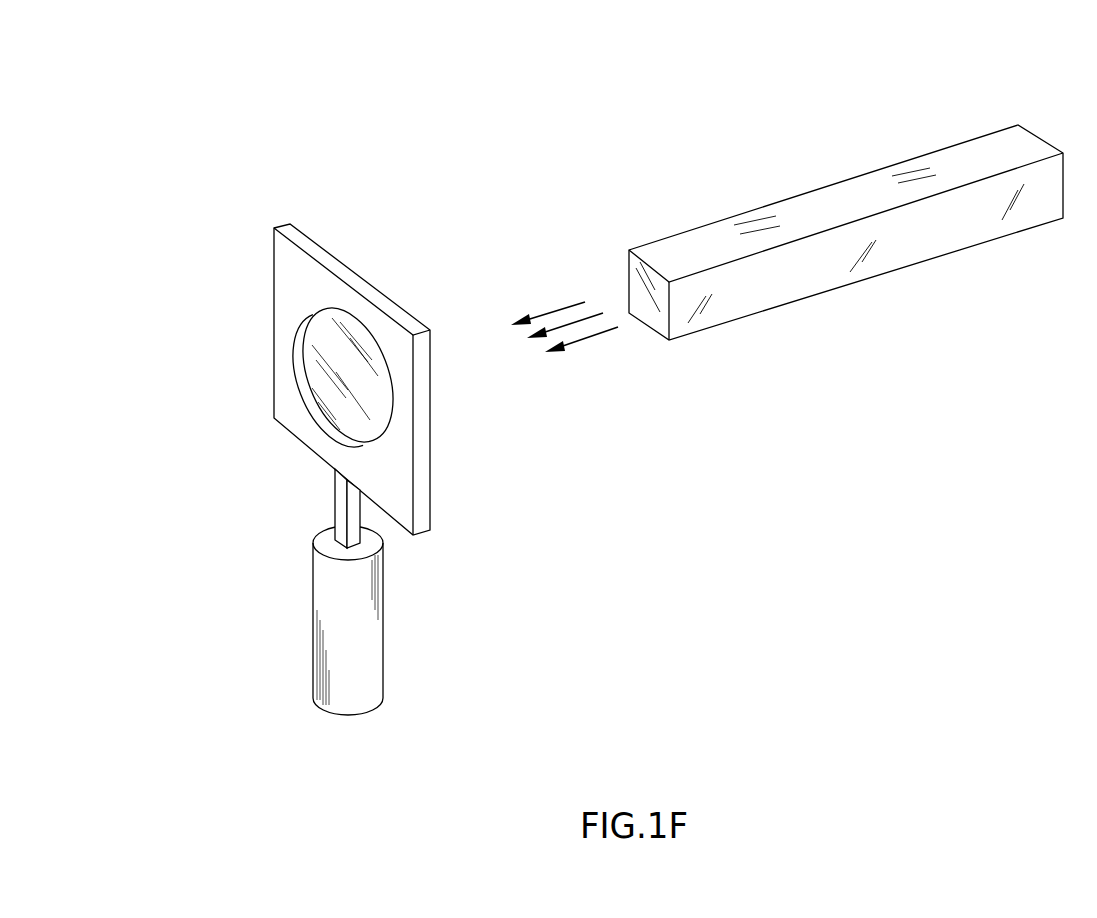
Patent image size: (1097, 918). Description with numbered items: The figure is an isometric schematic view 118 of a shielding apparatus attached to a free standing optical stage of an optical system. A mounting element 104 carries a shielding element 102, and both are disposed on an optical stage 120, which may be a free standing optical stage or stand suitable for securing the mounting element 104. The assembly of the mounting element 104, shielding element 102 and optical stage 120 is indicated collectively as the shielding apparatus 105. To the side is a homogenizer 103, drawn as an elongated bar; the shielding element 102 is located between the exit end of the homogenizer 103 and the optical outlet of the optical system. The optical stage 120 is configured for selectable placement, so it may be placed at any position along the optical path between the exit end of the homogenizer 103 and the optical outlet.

The schematic view 118 is at (264, 96).
The lens assembly 105 is at (176, 248).
The mounting element 104 is at (289, 263).
The shielding element 102 is at (320, 340).
The optical stage 120 is at (375, 648).
The homogenizer 103 is at (837, 193).